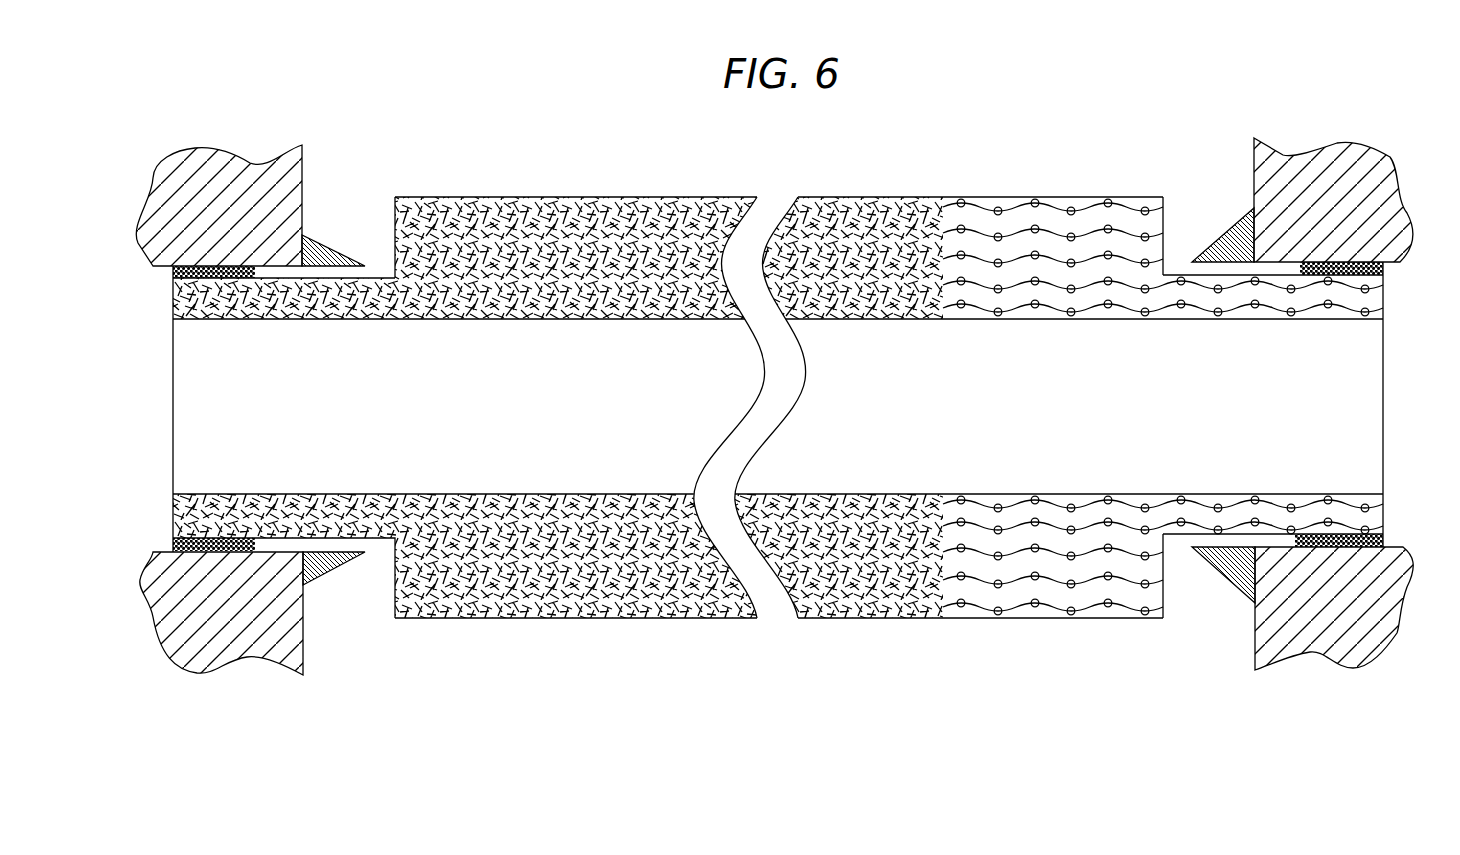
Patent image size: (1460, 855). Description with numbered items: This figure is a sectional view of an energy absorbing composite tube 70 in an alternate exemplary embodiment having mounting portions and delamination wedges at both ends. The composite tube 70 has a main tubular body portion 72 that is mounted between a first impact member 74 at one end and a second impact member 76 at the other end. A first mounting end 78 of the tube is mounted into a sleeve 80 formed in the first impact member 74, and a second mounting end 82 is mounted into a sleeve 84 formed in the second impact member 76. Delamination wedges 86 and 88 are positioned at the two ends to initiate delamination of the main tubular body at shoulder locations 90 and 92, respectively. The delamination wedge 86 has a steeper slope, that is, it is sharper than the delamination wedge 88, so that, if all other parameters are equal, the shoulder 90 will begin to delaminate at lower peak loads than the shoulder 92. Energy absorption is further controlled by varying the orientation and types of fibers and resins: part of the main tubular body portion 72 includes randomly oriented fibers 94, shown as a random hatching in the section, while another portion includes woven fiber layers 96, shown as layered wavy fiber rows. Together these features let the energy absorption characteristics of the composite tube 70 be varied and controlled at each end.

The composite tube 70 is at (980, 97).
The main tubular body portion 72 is at (595, 197).
The first impact member 74 is at (257, 170).
The second impact member 76 is at (1288, 158).
The first mounting end 78 is at (175, 517).
The sleeve 80 is at (192, 268).
The second mounting end 82 is at (1352, 512).
The sleeve 84 is at (1350, 264).
The delamination wedge 86 is at (318, 248).
The delamination wedge 88 is at (1222, 235).
The shoulder location 90 is at (395, 612).
The shoulder location 92 is at (1163, 618).
The randomly oriented fibers 94 is at (533, 255).
The woven fiber layers 96 is at (1000, 590).